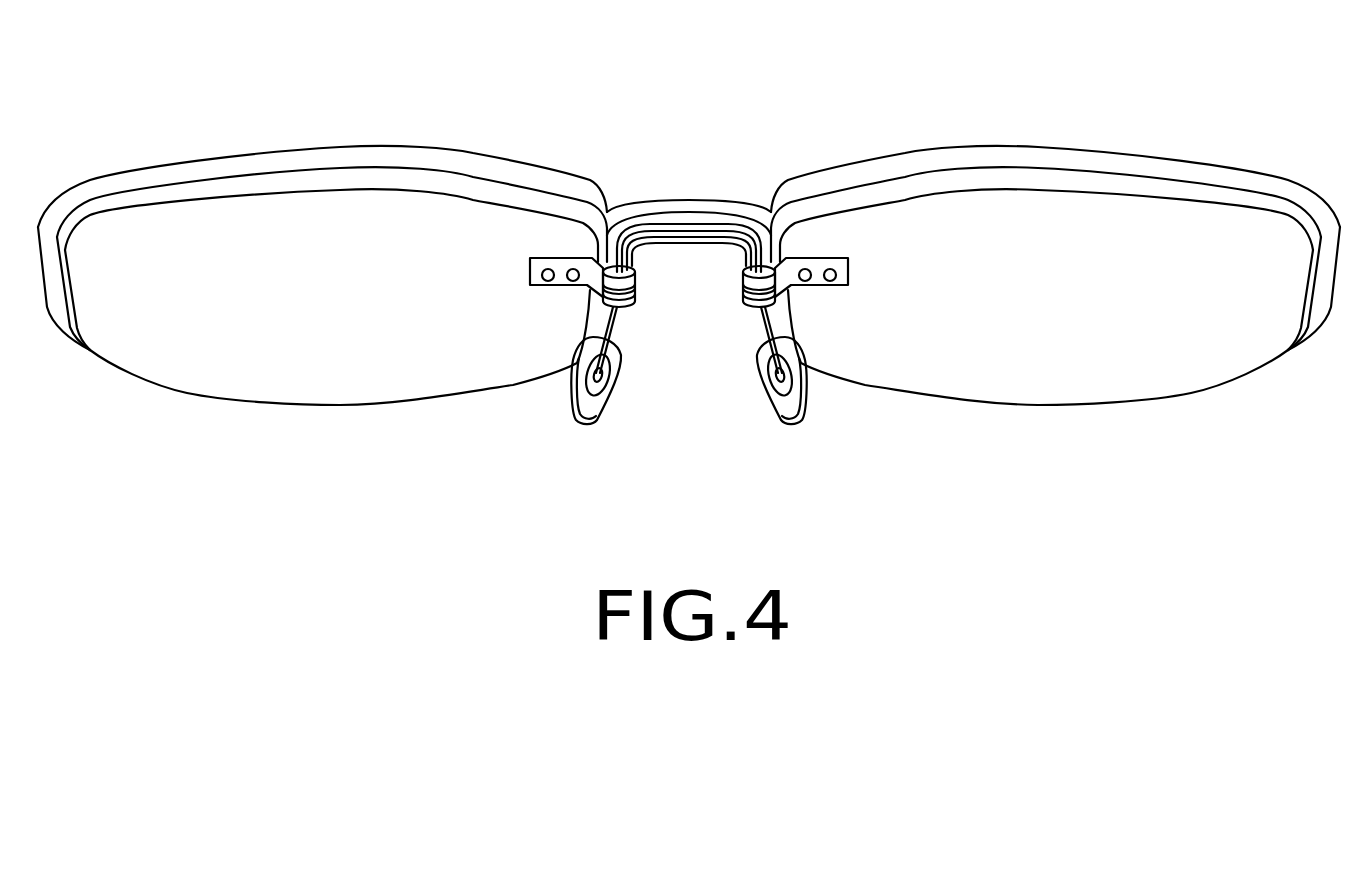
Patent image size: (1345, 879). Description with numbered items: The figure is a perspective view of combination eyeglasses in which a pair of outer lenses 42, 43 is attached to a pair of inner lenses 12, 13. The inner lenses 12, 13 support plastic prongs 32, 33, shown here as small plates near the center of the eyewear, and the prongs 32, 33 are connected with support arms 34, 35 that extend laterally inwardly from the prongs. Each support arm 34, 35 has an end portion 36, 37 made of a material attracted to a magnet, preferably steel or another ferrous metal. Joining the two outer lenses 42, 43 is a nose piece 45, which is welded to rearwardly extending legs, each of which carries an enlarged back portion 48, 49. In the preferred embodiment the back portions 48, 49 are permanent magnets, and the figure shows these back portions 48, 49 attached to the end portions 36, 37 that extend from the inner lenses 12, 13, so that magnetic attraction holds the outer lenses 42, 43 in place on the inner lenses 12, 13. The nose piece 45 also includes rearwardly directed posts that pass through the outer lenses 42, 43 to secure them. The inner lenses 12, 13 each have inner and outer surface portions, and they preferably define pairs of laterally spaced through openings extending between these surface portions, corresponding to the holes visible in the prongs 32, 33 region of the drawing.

The inner lens 12 is at (350, 382).
The inner lens 13 is at (1165, 365).
The outer lens 42 is at (307, 160).
The outer lens 43 is at (1017, 158).
The nose piece 45 is at (698, 213).
The plastic prong 32 is at (560, 267).
The plastic prong 33 is at (820, 267).
The support arm 34 is at (590, 290).
The support arm 35 is at (790, 290).
The end portion 36 is at (620, 303).
The end portion 37 is at (755, 303).
The enlarged back portion 48 is at (630, 275).
The enlarged back portion 49 is at (748, 285).